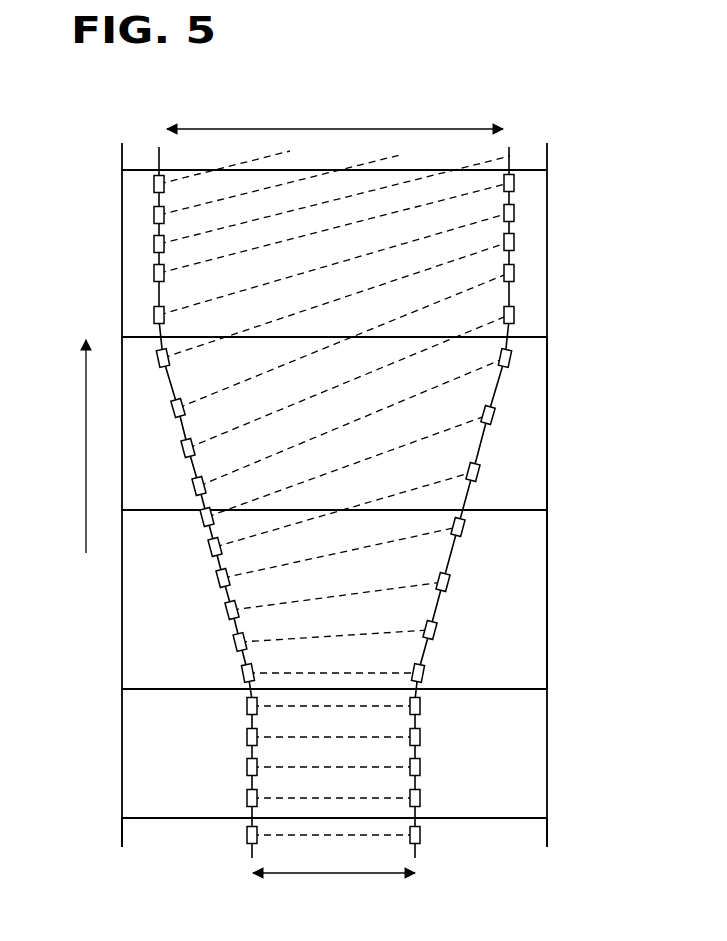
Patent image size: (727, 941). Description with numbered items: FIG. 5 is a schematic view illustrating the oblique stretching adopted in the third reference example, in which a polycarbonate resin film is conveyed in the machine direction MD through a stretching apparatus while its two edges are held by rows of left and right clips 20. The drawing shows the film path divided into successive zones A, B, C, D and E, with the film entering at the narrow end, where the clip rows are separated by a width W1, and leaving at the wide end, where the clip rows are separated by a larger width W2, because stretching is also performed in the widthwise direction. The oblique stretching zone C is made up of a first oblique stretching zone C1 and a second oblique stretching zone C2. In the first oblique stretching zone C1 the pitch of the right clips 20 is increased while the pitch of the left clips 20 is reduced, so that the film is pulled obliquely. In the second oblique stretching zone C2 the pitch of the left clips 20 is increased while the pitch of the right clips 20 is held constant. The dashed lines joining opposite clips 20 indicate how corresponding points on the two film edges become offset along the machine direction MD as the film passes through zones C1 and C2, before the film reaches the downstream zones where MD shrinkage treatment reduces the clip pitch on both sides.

The clip 20 is at (247, 837).
The region E is at (522, 160).
The region D is at (540, 278).
The region C is at (602, 435).
The second oblique stretching zone C2 is at (540, 447).
The first oblique stretching zone C1 is at (540, 609).
The region B is at (540, 747).
The region A is at (525, 838).
The width W1 is at (334, 859).
The width W2 is at (335, 115).
The machine direction MD is at (88, 432).